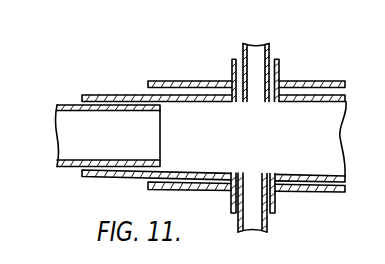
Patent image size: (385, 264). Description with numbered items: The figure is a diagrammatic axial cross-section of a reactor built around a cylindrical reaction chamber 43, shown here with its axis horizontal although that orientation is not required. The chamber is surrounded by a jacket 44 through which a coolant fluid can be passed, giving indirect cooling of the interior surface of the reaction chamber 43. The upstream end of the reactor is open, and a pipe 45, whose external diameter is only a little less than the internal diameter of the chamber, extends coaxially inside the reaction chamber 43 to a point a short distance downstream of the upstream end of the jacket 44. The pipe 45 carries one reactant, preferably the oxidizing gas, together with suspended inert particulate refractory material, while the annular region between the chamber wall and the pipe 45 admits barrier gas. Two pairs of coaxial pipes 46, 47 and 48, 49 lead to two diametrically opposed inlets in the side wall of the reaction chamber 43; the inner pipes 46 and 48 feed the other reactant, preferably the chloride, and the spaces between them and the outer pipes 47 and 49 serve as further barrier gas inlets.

The cylindrical reaction chamber 43 is at (348, 101).
The jacket 44 is at (335, 81).
The pipe 45 is at (72, 99).
The inner pipe 46 is at (243, 47).
The outer pipe 47 is at (279, 72).
The inner pipe 48 is at (267, 226).
The outer pipe 49 is at (276, 207).